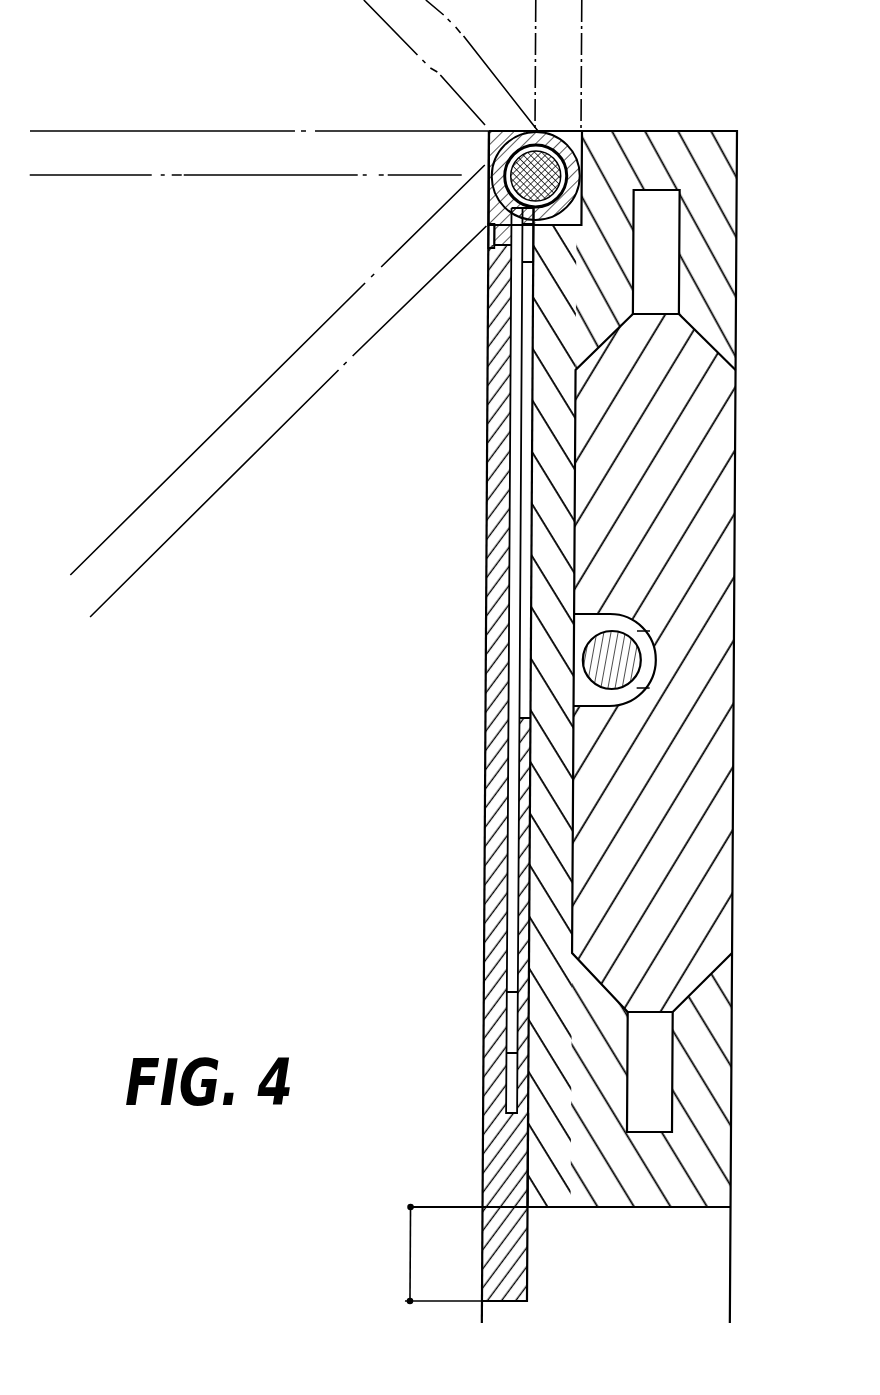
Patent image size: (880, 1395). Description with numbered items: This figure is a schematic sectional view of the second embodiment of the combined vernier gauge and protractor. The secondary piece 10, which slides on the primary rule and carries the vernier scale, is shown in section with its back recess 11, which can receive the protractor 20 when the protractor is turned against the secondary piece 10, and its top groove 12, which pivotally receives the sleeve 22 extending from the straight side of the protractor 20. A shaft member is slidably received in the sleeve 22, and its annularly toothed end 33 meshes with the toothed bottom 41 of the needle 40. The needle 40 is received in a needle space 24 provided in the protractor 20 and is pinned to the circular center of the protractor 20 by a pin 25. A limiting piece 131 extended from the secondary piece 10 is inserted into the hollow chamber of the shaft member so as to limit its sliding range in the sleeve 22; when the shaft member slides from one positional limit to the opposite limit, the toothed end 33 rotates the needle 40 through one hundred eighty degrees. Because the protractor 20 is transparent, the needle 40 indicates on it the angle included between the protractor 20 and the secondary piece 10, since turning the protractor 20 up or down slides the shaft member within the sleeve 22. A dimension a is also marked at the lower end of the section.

The secondary piece 10 is at (718, 1037).
The back recess 11 is at (534, 1183).
The top groove 12 is at (573, 213).
The protractor 20 is at (500, 455).
The sleeve 22 is at (503, 147).
The needle space 24 is at (520, 507).
The pin 25 is at (487, 228).
The annularly toothed end 33 is at (538, 130).
The needle 40 is at (512, 326).
The toothed bottom 41 is at (528, 248).
The limiting piece 131 is at (530, 155).
The dimension a is at (431, 1254).